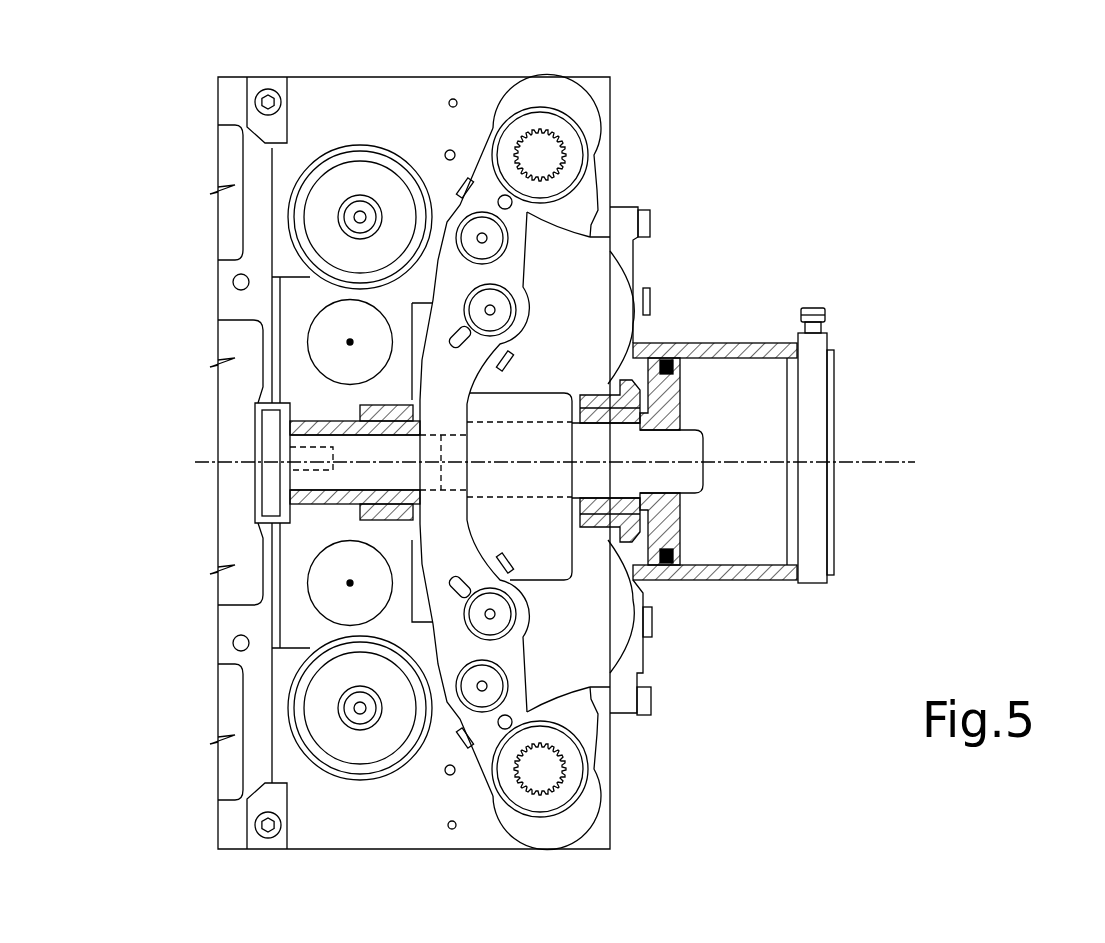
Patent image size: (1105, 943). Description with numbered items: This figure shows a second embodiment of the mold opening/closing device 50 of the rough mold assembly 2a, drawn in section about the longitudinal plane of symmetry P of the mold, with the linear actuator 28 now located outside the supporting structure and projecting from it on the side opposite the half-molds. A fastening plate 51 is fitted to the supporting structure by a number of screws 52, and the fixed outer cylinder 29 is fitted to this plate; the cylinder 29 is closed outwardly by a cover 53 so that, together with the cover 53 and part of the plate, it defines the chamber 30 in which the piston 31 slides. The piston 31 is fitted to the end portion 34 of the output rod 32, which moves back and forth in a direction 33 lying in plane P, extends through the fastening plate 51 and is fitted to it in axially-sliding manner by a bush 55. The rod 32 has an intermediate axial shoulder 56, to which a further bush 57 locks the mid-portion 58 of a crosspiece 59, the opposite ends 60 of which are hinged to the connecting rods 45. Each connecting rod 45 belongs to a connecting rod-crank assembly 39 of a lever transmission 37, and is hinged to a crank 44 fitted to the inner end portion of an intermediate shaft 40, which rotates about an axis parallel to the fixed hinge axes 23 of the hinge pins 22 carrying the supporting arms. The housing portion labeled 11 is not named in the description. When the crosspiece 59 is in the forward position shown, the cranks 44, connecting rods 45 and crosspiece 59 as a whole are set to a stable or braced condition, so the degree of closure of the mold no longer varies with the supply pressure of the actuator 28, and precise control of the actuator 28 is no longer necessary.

The housing 11 is at (340, 100).
The rough mold assembly 2a is at (662, 152).
The hinge pin 22 is at (337, 323).
The fixed hinge axis 23 is at (348, 342).
The linear actuator 28 is at (780, 318).
The fixed outer cylinder 29 is at (748, 343).
The chamber 30 is at (762, 375).
The piston 31 is at (683, 345).
The output rod 32 is at (535, 505).
The direction 33 is at (872, 463).
The end portion 34 is at (690, 447).
The lever transmission 37 is at (545, 289).
The connecting rod-crank assembly 39 is at (440, 200).
The intermediate shaft 40 is at (553, 153).
The crank 44 is at (527, 212).
The connecting rod 45 is at (455, 228).
The mold opening/closing device 50 is at (800, 156).
The fastening plate 51 is at (640, 262).
The screws 52 is at (650, 222).
The cover 53 is at (817, 532).
The bush 55 is at (770, 560).
The intermediate axial shoulder 56 is at (470, 500).
The bush 57 is at (455, 483).
The mid-portion 58 is at (468, 418).
The crosspiece 59 is at (445, 388).
The opposite ends 60 is at (468, 292).
The longitudinal plane of symmetry P is at (725, 450).